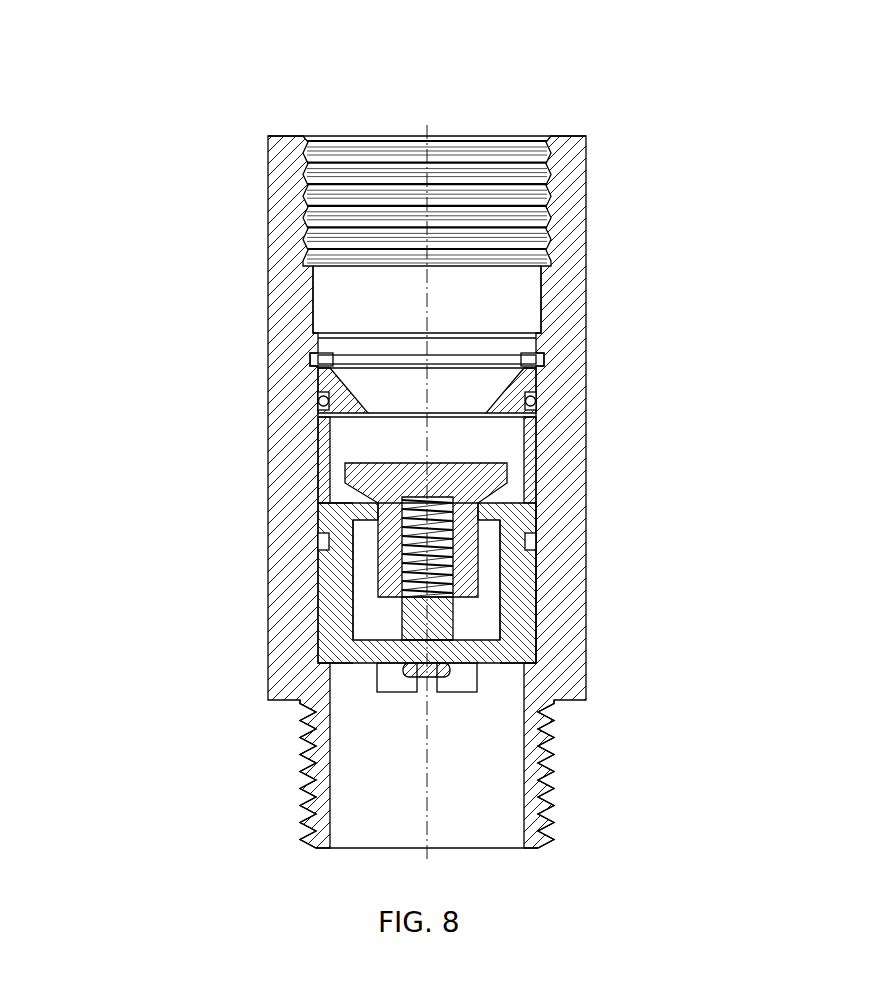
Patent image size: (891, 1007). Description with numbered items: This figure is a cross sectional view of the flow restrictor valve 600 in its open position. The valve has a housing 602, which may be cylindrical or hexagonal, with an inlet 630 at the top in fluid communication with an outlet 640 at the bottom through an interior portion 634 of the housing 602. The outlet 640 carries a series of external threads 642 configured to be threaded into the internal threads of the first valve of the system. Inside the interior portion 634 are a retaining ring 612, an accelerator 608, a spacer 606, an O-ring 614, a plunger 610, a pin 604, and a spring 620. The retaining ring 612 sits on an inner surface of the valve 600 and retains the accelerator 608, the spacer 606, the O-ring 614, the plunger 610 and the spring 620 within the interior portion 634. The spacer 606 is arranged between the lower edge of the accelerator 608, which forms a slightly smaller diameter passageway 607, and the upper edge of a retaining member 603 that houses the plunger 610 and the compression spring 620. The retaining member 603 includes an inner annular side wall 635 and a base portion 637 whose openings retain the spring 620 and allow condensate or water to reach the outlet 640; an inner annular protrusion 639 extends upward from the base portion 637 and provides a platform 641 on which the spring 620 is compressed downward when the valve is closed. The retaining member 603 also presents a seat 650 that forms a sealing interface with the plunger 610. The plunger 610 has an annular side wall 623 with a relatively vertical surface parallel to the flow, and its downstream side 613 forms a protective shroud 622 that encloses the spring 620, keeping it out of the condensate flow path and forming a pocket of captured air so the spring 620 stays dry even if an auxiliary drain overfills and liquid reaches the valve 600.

The flow restrictor valve 600 is at (471, 471).
The housing 602 is at (283, 131).
The retaining member 603 is at (530, 659).
The pin 604 is at (540, 645).
The spacer 606 is at (320, 462).
The passageway 607 is at (376, 414).
The accelerator 608 is at (316, 379).
The plunger 610 is at (318, 506).
The retaining ring 612 is at (316, 356).
The downstream side 613 is at (370, 561).
The O-ring 614 is at (540, 394).
The spring 620 is at (458, 580).
The protective shroud 622 is at (447, 602).
The annular side wall 623 is at (512, 465).
The inlet 630 is at (474, 122).
The interior portion 634 is at (510, 294).
The inner annular side wall 635 is at (506, 604).
The base portion 637 is at (328, 663).
The inner annular protrusion 639 is at (442, 634).
The outlet 640 is at (489, 820).
The platform 641 is at (453, 600).
The external threads 642 is at (298, 791).
The seat 650 is at (540, 505).